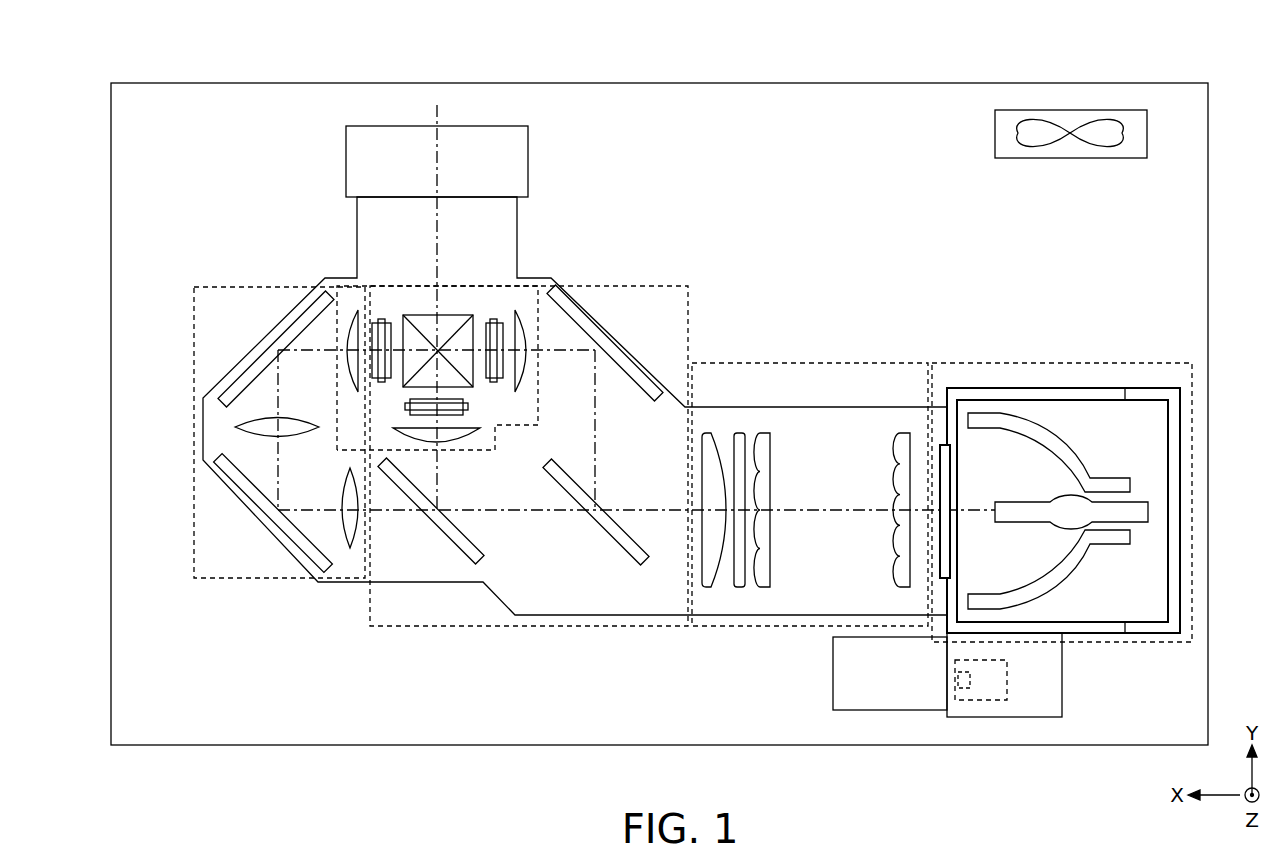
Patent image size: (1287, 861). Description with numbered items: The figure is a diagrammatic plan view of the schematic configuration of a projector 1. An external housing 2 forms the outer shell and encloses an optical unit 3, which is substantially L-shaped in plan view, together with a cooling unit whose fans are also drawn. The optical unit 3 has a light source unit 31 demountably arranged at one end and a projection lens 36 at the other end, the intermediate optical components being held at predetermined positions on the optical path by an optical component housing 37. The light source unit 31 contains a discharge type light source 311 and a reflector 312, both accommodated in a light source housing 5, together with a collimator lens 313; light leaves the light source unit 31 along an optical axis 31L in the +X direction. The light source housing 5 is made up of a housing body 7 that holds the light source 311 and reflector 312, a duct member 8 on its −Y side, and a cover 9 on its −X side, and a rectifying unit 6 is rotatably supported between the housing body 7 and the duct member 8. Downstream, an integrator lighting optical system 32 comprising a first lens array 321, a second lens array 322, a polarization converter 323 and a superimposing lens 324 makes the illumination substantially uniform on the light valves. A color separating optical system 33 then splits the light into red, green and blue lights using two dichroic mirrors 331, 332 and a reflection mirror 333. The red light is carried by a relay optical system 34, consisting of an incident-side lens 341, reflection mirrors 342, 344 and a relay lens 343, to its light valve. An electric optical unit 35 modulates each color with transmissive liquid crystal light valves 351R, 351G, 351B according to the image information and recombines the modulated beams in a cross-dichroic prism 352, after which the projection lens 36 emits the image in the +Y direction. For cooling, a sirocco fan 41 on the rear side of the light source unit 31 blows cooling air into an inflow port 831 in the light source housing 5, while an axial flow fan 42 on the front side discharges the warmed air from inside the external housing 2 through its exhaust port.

The projector 1 is at (730, 66).
The external housing 2 is at (111, 250).
The optical unit 3 is at (672, 161).
The light source housing 5 is at (1013, 805).
The rectifying unit 6 is at (977, 703).
The housing body 7 is at (1023, 630).
The duct member 8 is at (1050, 710).
The cover 9 is at (1140, 630).
The light source unit 31 is at (983, 360).
The light source 311 is at (1030, 500).
The reflector 312 is at (1082, 452).
The collimator lens 313 is at (935, 558).
The optical axis 31L is at (992, 510).
The integrator lighting optical system 32 is at (727, 630).
The first lens array 321 is at (905, 440).
The second lens array 322 is at (765, 440).
The polarization converter 323 is at (740, 440).
The superimposing lens 324 is at (712, 440).
The color separating optical system 33 is at (603, 630).
The dichroic mirror 331 is at (628, 556).
The dichroic mirror 332 is at (465, 556).
The reflection mirror 333 is at (620, 360).
The relay optical system 34 is at (194, 433).
The incident-side lens 341 is at (350, 548).
The reflection mirror 342 is at (222, 460).
The relay lens 343 is at (290, 430).
The reflection mirror 344 is at (262, 362).
The electric optical unit 35 is at (442, 296).
The liquid crystal light valve for R-light 351R is at (381, 322).
The liquid crystal light valve for G-light 351G is at (480, 412).
The liquid crystal light valve for B-light 351B is at (495, 322).
The cross-dichroic prism 352 is at (456, 318).
The projection lens 36 is at (520, 155).
The optical component housing 37 is at (663, 618).
The sirocco fan 41 is at (873, 700).
The axial flow fan 42 is at (995, 137).
The inflow port 831 is at (943, 700).